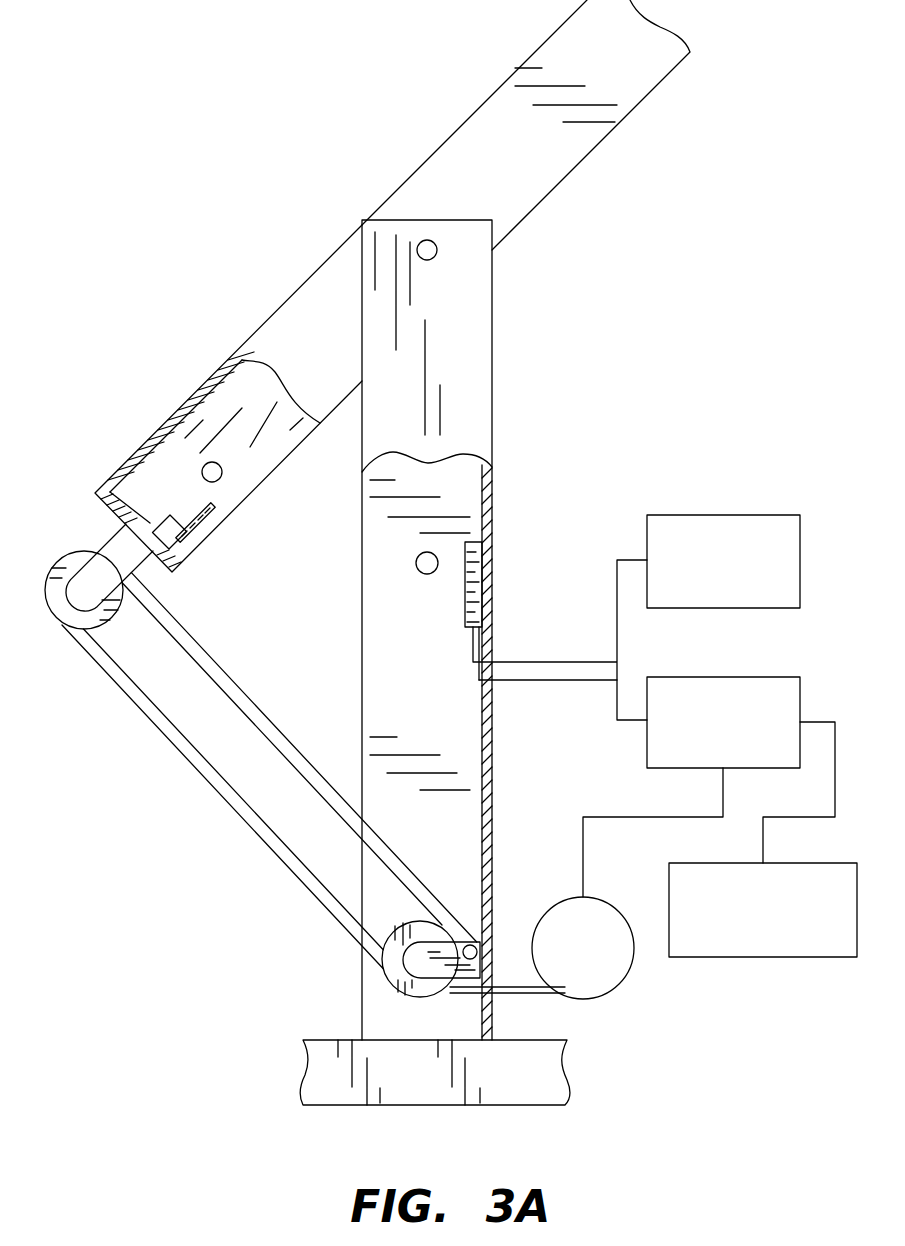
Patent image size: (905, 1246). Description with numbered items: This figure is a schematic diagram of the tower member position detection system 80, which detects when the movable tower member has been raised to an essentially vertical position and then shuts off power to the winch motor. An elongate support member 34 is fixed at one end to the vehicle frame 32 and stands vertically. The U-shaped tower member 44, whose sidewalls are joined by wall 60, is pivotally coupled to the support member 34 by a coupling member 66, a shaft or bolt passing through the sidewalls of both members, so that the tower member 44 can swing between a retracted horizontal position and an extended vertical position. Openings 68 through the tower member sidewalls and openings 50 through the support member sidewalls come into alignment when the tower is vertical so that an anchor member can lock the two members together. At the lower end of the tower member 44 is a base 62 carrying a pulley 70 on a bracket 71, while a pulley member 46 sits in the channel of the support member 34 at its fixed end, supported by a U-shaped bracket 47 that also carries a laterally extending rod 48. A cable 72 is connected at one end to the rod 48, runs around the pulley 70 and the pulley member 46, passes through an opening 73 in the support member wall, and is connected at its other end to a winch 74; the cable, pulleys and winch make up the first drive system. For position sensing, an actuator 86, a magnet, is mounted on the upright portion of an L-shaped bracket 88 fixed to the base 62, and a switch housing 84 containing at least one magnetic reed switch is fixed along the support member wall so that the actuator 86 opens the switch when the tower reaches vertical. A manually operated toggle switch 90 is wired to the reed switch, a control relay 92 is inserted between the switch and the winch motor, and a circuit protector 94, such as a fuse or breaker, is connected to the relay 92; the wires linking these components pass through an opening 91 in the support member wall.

The frame 32 is at (330, 1072).
The support member 34 is at (470, 405).
The tower member 44 is at (500, 138).
The pulley member 46 is at (392, 946).
The bracket 47 is at (412, 965).
The rod 48 is at (478, 948).
The openings 50 is at (424, 566).
The wall 60 is at (205, 385).
The base 62 is at (105, 498).
The coupling member 66 is at (432, 258).
The openings 68 is at (216, 478).
The pulley 70 is at (60, 600).
The bracket 71 is at (118, 542).
The cable 72 is at (155, 725).
The opening 73 is at (495, 1005).
The winch 74 is at (602, 973).
The tower member position detection system 80 is at (688, 422).
The switch housing 84 is at (478, 573).
The actuator 86 is at (200, 540).
The L-shaped bracket 88 is at (185, 525).
The toggle switch 90 is at (745, 517).
The opening 91 is at (488, 683).
The relay 92 is at (728, 683).
The circuit protector 94 is at (748, 950).